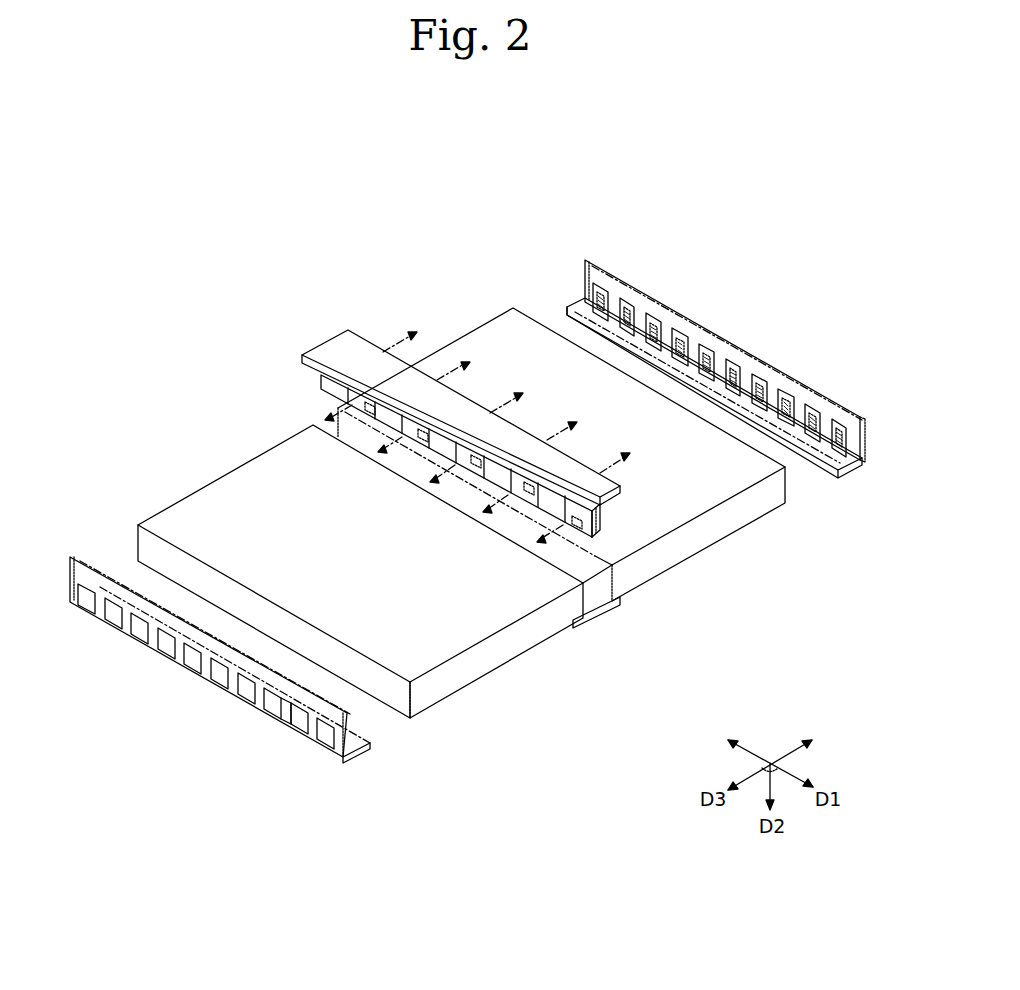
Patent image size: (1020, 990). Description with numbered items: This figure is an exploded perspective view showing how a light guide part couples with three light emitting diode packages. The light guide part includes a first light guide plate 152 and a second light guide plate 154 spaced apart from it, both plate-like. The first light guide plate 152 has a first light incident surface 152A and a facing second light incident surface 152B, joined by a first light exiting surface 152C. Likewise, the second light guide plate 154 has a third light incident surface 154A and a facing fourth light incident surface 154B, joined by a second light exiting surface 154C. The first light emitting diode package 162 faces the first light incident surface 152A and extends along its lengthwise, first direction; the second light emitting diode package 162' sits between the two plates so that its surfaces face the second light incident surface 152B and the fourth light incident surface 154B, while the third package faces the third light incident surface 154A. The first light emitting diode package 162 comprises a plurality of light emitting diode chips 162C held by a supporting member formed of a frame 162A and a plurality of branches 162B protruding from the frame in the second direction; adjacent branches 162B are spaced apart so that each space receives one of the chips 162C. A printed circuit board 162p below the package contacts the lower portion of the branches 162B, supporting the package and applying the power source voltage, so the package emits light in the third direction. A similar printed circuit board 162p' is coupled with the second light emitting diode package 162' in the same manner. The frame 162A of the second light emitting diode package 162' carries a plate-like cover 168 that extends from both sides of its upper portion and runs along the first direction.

The first light guide plate 152 is at (367, 601).
The first light incident surface 152A is at (395, 692).
The second light incident surface 152B is at (597, 610).
The first light exiting surface 152C is at (228, 488).
The second light guide plate 154 is at (586, 465).
The third light incident surface 154A is at (787, 478).
The fourth light incident surface 154B is at (623, 600).
The second light exiting surface 154C is at (483, 343).
The first light emitting diode package 162 is at (236, 651).
The frame 162A is at (273, 683).
The branches 162B is at (290, 710).
The light emitting diode chips 162C is at (220, 677).
The printed circuit board 162p is at (251, 701).
The second light emitting diode package 162' is at (522, 478).
The printed circuit board 162p' is at (612, 636).
The cover 168 is at (625, 490).